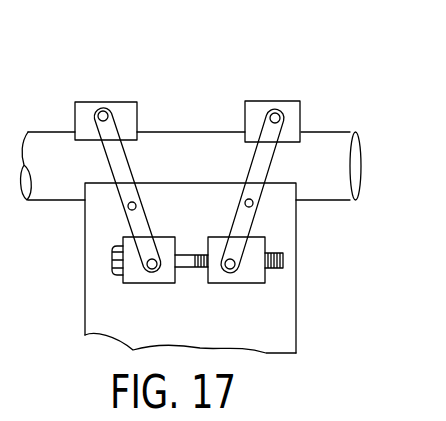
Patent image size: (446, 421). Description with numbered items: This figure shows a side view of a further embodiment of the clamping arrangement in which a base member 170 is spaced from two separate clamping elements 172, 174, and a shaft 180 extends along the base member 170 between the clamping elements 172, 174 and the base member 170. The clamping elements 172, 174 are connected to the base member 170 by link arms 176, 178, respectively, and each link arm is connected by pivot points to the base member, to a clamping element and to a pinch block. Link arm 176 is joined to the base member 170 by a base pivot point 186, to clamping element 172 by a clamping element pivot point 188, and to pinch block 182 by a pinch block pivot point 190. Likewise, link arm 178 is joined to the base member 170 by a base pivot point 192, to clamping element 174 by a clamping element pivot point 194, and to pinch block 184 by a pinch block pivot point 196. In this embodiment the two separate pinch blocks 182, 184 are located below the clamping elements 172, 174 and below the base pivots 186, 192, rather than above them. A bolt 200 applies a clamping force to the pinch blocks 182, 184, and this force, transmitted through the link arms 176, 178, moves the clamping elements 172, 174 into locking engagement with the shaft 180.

The base member 170 is at (283, 335).
The clamping element 172 is at (293, 118).
The clamping element 174 is at (133, 105).
The link arm 176 is at (262, 167).
The link arm 178 is at (115, 150).
The shaft 180 is at (210, 172).
The pinch block 182 is at (256, 243).
The pinch block 184 is at (133, 275).
The base pivot point 186 is at (256, 193).
The clamping element pivot point 188 is at (275, 112).
The pinch block pivot point 190 is at (238, 266).
The base pivot point 192 is at (137, 207).
The clamping element pivot point 194 is at (102, 110).
The pinch block pivot point 196 is at (152, 270).
The bolt 200 is at (112, 260).